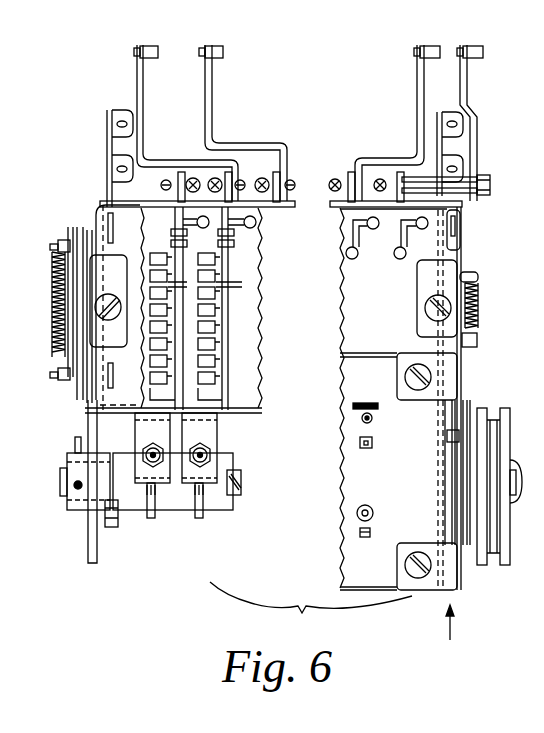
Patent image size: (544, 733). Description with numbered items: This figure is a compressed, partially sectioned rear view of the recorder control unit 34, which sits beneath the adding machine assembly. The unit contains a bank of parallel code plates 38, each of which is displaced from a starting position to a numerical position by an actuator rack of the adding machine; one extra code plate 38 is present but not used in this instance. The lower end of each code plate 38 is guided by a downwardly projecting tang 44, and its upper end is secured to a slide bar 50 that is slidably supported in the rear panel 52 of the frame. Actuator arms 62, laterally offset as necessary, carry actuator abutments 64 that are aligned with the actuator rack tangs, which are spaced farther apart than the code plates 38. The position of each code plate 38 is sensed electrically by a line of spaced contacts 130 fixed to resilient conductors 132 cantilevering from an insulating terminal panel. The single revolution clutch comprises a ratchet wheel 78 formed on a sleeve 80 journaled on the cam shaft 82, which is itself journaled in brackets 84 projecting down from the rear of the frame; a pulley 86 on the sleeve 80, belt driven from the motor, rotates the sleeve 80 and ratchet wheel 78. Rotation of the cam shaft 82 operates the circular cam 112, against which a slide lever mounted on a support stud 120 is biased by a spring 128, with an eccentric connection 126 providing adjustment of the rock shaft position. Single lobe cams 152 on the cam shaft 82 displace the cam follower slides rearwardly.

The recorder control unit 34 is at (448, 634).
The code plate 38 is at (174, 258).
The tang 44 is at (235, 413).
The slide bar 50 is at (177, 260).
The rear panel 52 is at (365, 312).
The actuator arm 62 is at (205, 105).
The actuator abutment 64 is at (224, 48).
The ratchet wheel 78 is at (462, 545).
The sleeve 80 is at (468, 412).
The cam shaft 82 is at (60, 490).
The bracket 84 is at (109, 452).
The pulley 86 is at (495, 525).
The circular cam 112 is at (88, 555).
The support stud 120 is at (60, 378).
The eccentric connection 126 is at (64, 244).
The spring 128 is at (50, 270).
The electrical contacts 130 is at (210, 332).
The resilient conductors 132 is at (158, 338).
The single lobe cam 152 is at (151, 518).